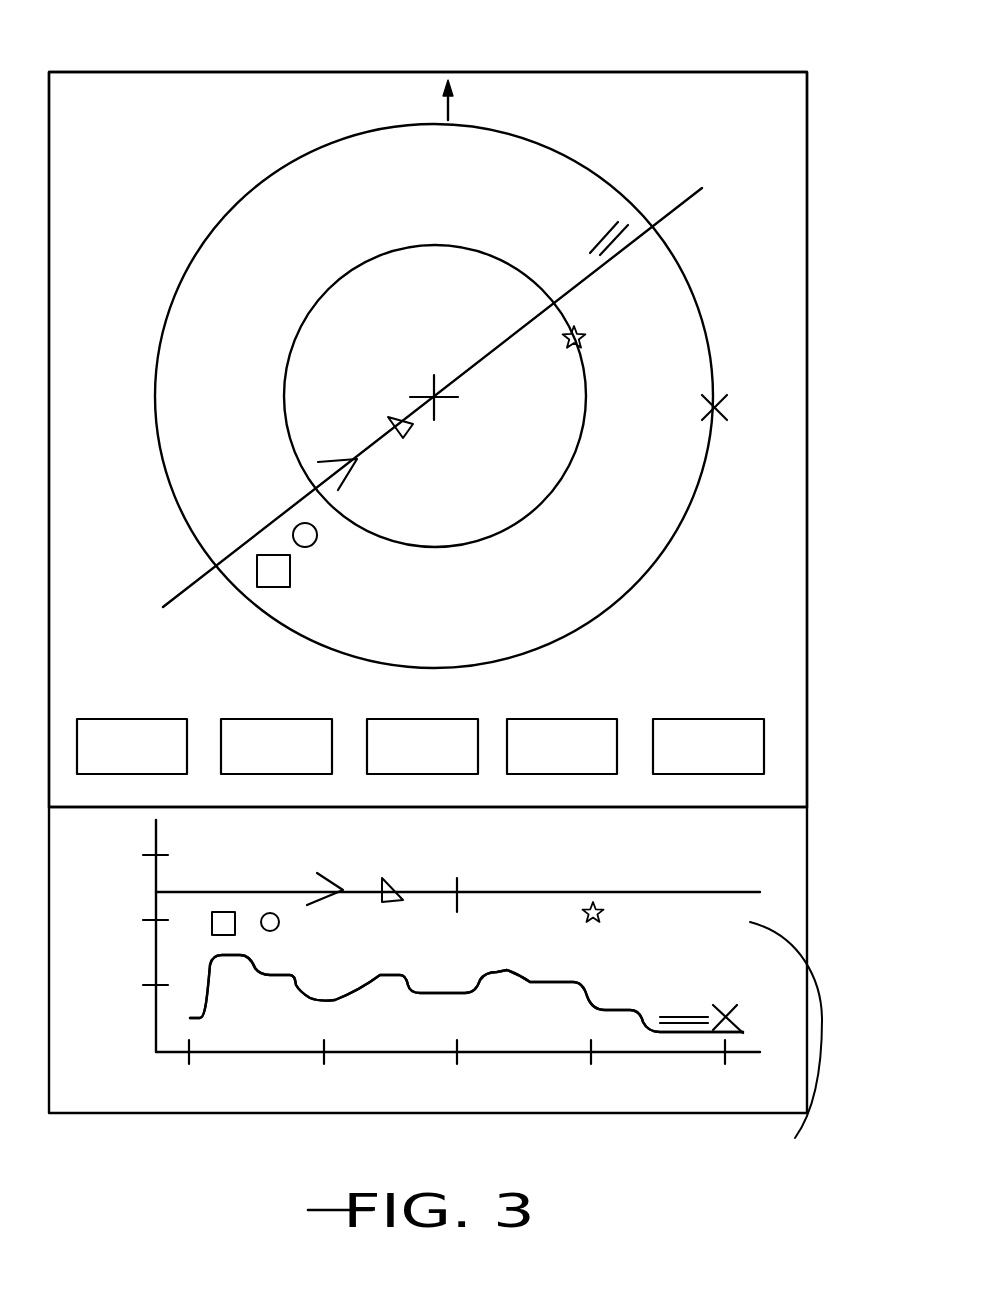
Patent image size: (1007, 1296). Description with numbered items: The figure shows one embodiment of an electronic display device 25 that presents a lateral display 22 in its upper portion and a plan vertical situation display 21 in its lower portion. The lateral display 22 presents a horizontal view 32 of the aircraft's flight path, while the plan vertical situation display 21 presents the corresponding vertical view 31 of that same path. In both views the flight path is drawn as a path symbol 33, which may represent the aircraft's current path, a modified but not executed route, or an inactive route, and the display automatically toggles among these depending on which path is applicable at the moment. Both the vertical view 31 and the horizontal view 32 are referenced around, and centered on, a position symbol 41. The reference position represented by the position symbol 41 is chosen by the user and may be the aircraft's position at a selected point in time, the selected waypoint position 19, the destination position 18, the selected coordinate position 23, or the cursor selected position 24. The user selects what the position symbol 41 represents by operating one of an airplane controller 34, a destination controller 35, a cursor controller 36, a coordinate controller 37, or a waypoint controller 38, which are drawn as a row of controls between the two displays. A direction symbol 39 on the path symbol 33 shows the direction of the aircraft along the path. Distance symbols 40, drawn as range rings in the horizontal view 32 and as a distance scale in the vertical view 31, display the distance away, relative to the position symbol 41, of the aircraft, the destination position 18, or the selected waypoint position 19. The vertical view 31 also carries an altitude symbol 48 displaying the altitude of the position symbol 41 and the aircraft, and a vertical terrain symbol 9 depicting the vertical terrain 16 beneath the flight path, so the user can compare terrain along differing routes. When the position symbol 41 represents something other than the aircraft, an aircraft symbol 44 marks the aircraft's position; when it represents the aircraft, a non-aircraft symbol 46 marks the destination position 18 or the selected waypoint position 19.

The electronic display device 25 is at (226, 66).
The lateral display 22 is at (780, 252).
The plan vertical situation display 21 is at (777, 865).
The vertical view 31 is at (786, 1042).
The altitude symbol 48 is at (156, 878).
The distance symbol 40 is at (495, 203).
The path symbol 33 is at (513, 337).
The position symbol 41 is at (428, 393).
The selected waypoint position 19 is at (585, 337).
The aircraft symbol 44 is at (405, 438).
The direction symbol 39 is at (345, 478).
The selected coordinate position 23 is at (313, 545).
The cursor selected position 24 is at (290, 587).
The destination position 18 is at (608, 227).
The non-aircraft symbol 46 is at (720, 404).
The horizontal view 32 is at (655, 518).
The airplane controller 34 is at (145, 719).
The destination controller 35 is at (265, 719).
The cursor controller 36 is at (430, 719).
The coordinate controller 37 is at (565, 719).
The waypoint controller 38 is at (720, 719).
The vertical terrain 16 is at (476, 993).
The vertical terrain symbol 9 is at (466, 993).